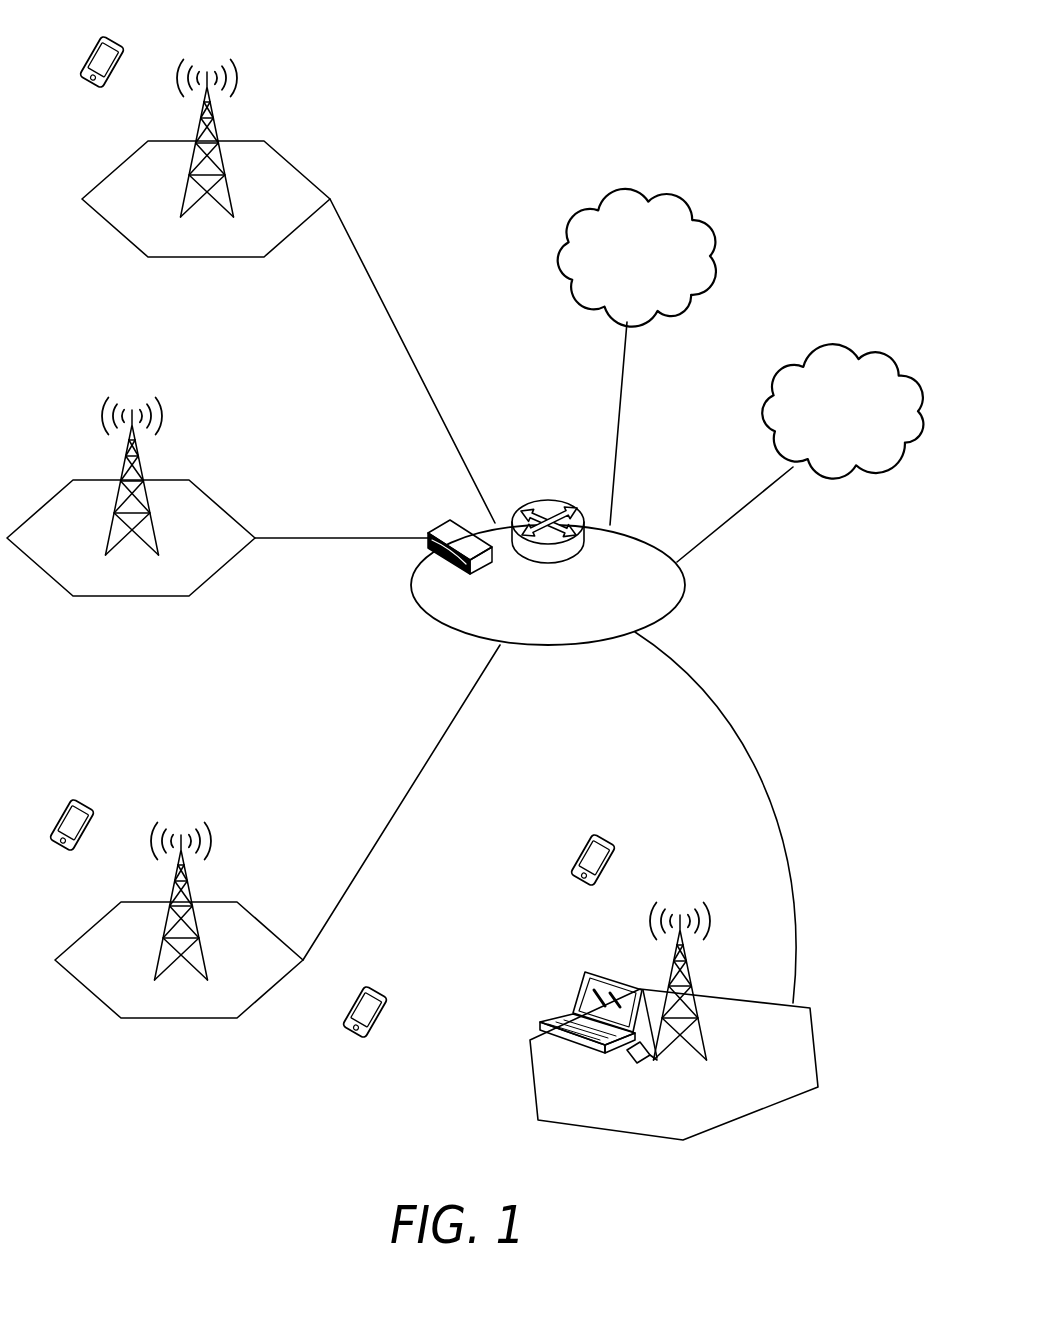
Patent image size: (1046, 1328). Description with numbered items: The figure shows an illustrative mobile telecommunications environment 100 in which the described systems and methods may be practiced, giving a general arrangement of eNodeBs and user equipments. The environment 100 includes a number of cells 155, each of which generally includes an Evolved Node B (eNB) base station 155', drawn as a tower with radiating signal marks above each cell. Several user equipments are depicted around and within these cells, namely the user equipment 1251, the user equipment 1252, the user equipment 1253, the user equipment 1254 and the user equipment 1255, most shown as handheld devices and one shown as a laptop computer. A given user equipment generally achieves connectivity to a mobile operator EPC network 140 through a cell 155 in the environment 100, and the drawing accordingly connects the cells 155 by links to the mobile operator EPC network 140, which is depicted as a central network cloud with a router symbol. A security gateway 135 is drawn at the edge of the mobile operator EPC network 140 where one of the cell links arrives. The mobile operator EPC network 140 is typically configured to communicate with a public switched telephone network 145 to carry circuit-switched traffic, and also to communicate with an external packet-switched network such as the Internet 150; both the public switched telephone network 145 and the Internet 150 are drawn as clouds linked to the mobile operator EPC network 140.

The environment 100 is at (860, 67).
The user equipment 1251 is at (605, 830).
The user equipment 1252 is at (576, 994).
The user equipment 1253 is at (110, 40).
The user equipment 1254 is at (82, 795).
The user equipment 1255 is at (375, 985).
The security gateway (SeGW) 135 is at (440, 522).
The mobile operator EPC network 140 is at (540, 647).
The public switched telephone network 145 is at (870, 353).
The Internet 150 is at (665, 200).
The cell 155 is at (412, 606).
The Evolved Node B base station 155' is at (433, 486).